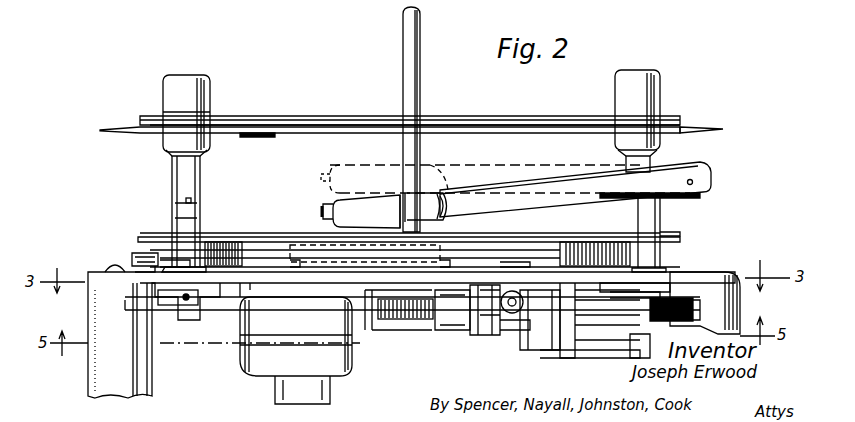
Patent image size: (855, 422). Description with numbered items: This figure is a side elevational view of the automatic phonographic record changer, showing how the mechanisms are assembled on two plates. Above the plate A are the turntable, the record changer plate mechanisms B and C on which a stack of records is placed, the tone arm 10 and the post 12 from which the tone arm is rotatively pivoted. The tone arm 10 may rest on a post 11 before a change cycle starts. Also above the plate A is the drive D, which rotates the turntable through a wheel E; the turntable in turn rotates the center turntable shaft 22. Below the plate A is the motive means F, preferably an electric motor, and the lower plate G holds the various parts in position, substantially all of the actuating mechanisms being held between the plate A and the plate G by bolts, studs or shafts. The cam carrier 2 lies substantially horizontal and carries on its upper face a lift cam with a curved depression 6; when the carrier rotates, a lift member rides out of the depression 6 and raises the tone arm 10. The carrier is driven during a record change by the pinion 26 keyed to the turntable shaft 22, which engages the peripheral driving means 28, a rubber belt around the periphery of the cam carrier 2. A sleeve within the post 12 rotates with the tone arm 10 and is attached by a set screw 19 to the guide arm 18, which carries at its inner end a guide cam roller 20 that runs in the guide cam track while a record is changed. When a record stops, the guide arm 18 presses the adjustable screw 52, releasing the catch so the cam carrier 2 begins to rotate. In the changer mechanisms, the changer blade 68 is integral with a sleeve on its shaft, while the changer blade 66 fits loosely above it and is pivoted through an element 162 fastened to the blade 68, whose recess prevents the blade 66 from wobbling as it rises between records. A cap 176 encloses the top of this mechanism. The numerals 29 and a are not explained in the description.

The cap 176 is at (193, 76).
The element 162 is at (215, 128).
The changer blade 66 is at (128, 130).
The changer blade 68 is at (249, 134).
The record changer plate mechanism B is at (200, 177).
The turntable shaft 22 is at (403, 156).
The record changer plate mechanism C is at (652, 163).
The tone arm 10 is at (526, 165).
The post 11 is at (397, 212).
The post 12 is at (662, 219).
The drive D is at (292, 236).
The knurled roller 29 is at (250, 237).
The wheel E is at (440, 250).
The plate A is at (98, 268).
The motive means F is at (228, 358).
The pinion 26 is at (395, 322).
The peripheral driving means 28 is at (447, 326).
The cam carrier 2 is at (478, 322).
The guide cam roller 20 is at (500, 317).
The adjustable screw 52 is at (486, 340).
The lower plate G is at (595, 323).
The guide arm 18 is at (665, 274).
The set screw 19 is at (692, 272).
The curved depression 6 is at (672, 300).
The shaft end a is at (703, 303).